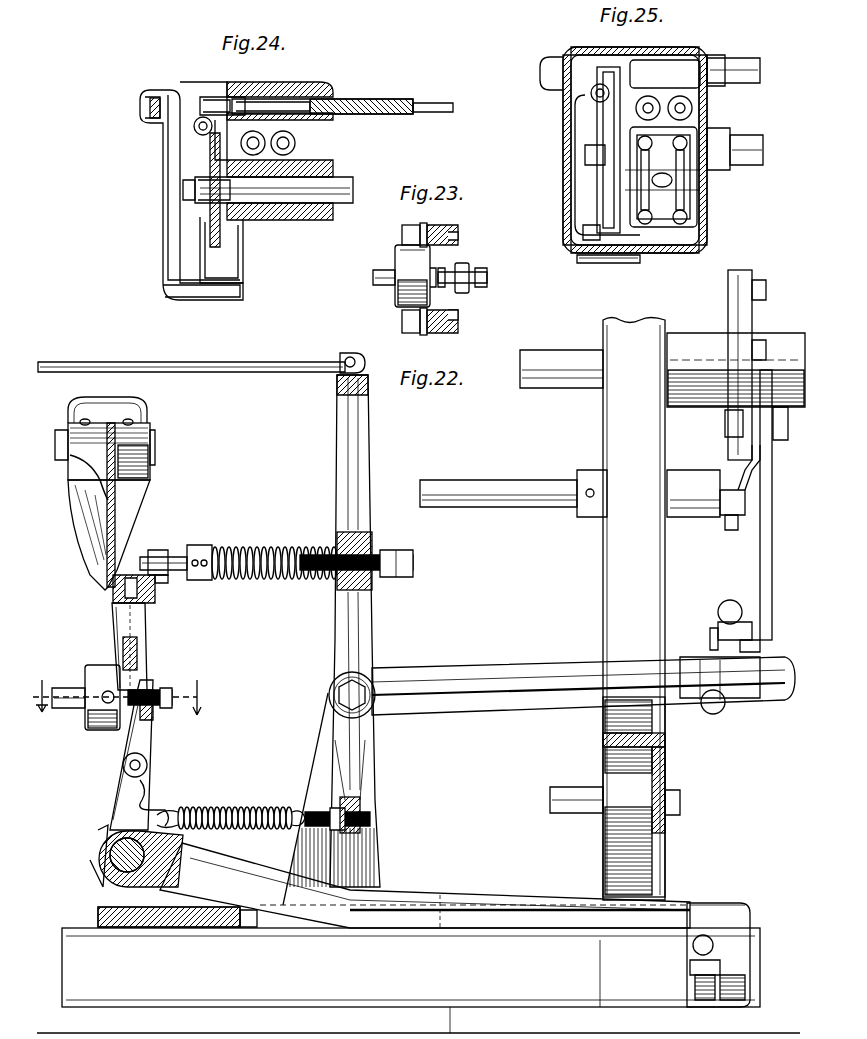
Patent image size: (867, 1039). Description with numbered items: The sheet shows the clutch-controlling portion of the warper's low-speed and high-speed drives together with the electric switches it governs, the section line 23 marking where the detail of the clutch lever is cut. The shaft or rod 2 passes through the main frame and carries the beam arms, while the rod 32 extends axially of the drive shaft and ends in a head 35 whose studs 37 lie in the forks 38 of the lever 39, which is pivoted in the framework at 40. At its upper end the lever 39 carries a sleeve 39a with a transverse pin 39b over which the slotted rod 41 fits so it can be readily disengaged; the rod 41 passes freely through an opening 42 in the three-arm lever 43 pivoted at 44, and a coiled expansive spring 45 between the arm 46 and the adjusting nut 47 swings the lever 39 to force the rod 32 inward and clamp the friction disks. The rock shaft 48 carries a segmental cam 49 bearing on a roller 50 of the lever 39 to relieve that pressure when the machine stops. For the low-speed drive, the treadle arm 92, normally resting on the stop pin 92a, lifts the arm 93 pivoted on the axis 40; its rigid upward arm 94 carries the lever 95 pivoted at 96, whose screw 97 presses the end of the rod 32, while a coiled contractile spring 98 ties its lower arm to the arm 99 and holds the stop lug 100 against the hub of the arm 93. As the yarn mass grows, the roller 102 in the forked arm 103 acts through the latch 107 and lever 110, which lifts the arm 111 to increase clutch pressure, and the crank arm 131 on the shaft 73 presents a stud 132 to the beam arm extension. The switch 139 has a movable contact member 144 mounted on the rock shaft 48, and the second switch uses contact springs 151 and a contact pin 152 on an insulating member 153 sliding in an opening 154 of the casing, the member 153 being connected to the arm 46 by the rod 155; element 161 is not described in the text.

In FIG. 22, the shaft or rod 2 is at (548, 382).
In FIG. 22, the section line 23 is at (126, 692).
In FIG. 23, the rod 32 is at (378, 276).
In FIG. 22, the rod 32 is at (68, 680).
In FIG. 23, the head 35 is at (398, 293).
In FIG. 22, the head 35 is at (95, 665).
In FIG. 23, the studs 37 is at (423, 224).
In FIG. 22, the studs 37 is at (106, 703).
In FIG. 23, the forks 38 is at (404, 236).
In FIG. 22, the forks 38 is at (110, 645).
In FIG. 23, the lever 39 is at (445, 226).
In FIG. 22, the lever 39 is at (135, 627).
In FIG. 22, the sleeve 39a is at (160, 550).
In FIG. 22, the transverse pin 39b is at (168, 580).
In FIG. 22, the pivot 40 is at (110, 858).
In FIG. 22, the rod 41 is at (178, 557).
In FIG. 22, the opening 42 is at (372, 583).
In FIG. 22, the three-arm lever 43 is at (330, 690).
In FIG. 22, the pivot 44 is at (355, 690).
In FIG. 22, the coiled expansive spring 45 is at (270, 548).
In FIG. 22, the arm 46 is at (340, 482).
In FIG. 22, the adjusting nut 47 is at (203, 545).
In FIG. 24, the rock shaft 48 is at (340, 180).
In FIG. 25, the rock shaft 48 is at (755, 145).
In FIG. 22, the rock shaft 48 is at (58, 435).
In FIG. 22, the segmental cam 49 is at (116, 527).
In FIG. 22, the roller 50 is at (127, 578).
In FIG. 22, the shaft 73 is at (462, 480).
In FIG. 22, the arm 92 is at (713, 945).
In FIG. 22, the stop pin 92a is at (745, 972).
In FIG. 22, the arm 93 is at (478, 890).
In FIG. 22, the arm 94 is at (148, 795).
In FIG. 23, the lever 95 is at (470, 282).
In FIG. 22, the lever 95 is at (145, 742).
In FIG. 22, the pivot 96 is at (147, 765).
In FIG. 23, the screw 97 is at (460, 270).
In FIG. 22, the screw 97 is at (142, 688).
In FIG. 22, the coiled contractile spring 98 is at (232, 810).
In FIG. 22, the arm 99 is at (362, 762).
In FIG. 22, the stop lug 100 is at (100, 838).
In FIG. 22, the roller 102 is at (777, 442).
In FIG. 22, the arm 103 is at (772, 554).
In FIG. 22, the latch 107 is at (720, 613).
In FIG. 22, the lever 110 is at (713, 714).
In FIG. 22, the arm 111 is at (527, 670).
In FIG. 22, the crank arm 131 is at (700, 470).
In FIG. 22, the stud 132 is at (745, 508).
In FIG. 24, the switch 139 is at (182, 195).
In FIG. 25, the switch 139 is at (617, 142).
In FIG. 25, the movable contact member 144 is at (590, 145).
In FIG. 24, the contact springs 151 is at (225, 125).
In FIG. 24, the contact pin 152 is at (293, 84).
In FIG. 24, the insulating member 153 is at (357, 108).
In FIG. 25, the insulating member 153 is at (745, 68).
In FIG. 24, the opening 154 is at (312, 122).
In FIG. 24, the rod 155 is at (445, 103).
In FIG. 22, the rod 155 is at (255, 352).
In FIG. 22, the screw 161 is at (728, 530).